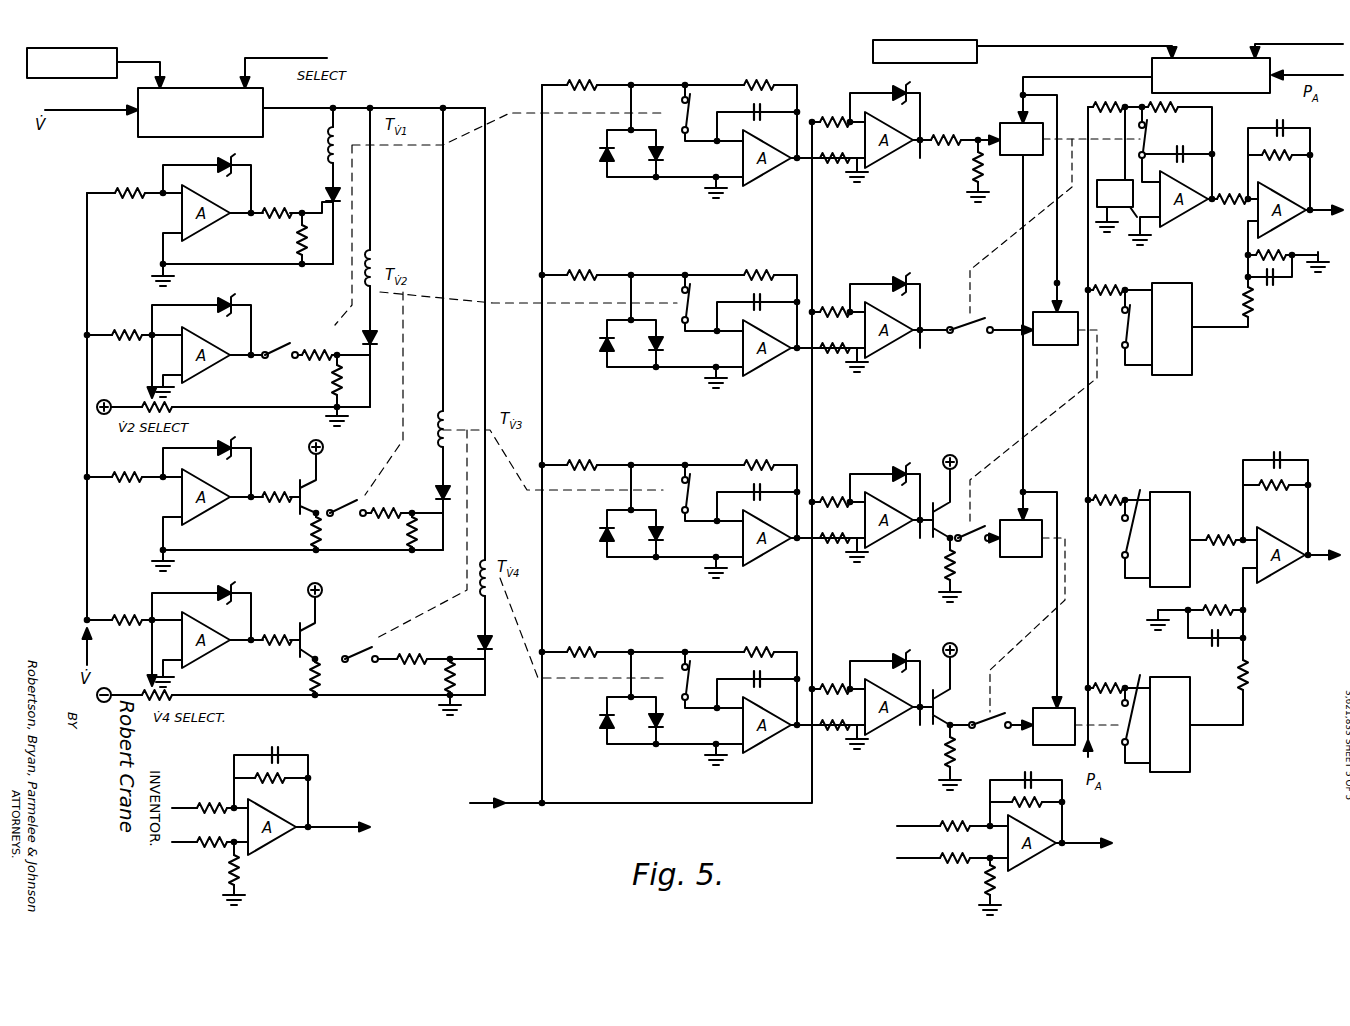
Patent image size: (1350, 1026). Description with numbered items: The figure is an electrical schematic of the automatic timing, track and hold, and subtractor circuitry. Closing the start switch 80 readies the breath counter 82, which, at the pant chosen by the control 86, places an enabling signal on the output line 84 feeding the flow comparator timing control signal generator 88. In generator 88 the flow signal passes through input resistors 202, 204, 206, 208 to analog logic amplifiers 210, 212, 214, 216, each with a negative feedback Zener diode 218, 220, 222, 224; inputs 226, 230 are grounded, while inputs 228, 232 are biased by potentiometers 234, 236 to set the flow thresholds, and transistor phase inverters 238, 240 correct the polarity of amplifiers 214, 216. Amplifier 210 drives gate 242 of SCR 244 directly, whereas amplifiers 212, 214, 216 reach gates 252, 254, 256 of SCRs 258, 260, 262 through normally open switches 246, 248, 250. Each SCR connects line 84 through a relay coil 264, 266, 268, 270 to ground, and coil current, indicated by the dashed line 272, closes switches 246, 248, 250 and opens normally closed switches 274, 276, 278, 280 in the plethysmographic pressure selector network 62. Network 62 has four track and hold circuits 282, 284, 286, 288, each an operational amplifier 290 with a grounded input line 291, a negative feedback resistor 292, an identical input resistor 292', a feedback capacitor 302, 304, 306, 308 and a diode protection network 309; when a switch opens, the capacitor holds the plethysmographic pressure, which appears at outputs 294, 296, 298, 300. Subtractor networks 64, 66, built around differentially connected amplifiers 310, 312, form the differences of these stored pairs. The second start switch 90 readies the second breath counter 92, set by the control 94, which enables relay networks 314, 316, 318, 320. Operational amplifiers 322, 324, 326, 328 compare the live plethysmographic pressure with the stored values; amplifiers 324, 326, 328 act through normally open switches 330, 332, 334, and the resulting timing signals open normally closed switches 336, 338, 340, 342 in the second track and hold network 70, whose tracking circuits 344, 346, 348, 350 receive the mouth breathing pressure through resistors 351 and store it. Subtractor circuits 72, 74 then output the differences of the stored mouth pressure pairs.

The plethysmographic pressure selector network 62 is at (580, 818).
The subtractor network 64 is at (280, 829).
The subtractor network 66 is at (1017, 843).
The second track and hold network 70 is at (1129, 780).
The subtractor circuit 72 is at (1288, 298).
The subtractor circuit 74 is at (1265, 612).
The start switch 80 is at (93, 78).
The breath counter 82 is at (137, 116).
The output line 84 is at (283, 108).
The control 86 is at (262, 52).
The flow comparator timing control signal generator 88 is at (422, 712).
The second start switch 90 is at (950, 64).
The second breath counter 92 is at (1262, 94).
The control 94 is at (1248, 44).
The input resistor 202 is at (125, 190).
The input resistor 204 is at (133, 330).
The input resistor 206 is at (120, 470).
The input resistor 208 is at (128, 612).
The analog logic amplifier 210 is at (215, 226).
The analog logic amplifier 212 is at (215, 370).
The analog logic amplifier 214 is at (208, 515).
The analog logic amplifier 216 is at (212, 655).
The Zener diode 218 is at (228, 160).
The Zener diode 220 is at (228, 295).
The Zener diode 222 is at (225, 445).
The Zener diode 224 is at (228, 588).
The input 226 is at (163, 252).
The input 228 is at (150, 383).
The input 230 is at (163, 530).
The input 232 is at (150, 658).
The potentiometer 234 is at (145, 400).
The potentiometer 236 is at (178, 697).
The transistor phase inverter 238 is at (330, 486).
The transistor phase inverter 240 is at (327, 622).
The gate 242 is at (330, 195).
The silicon controlled rectifier 244 is at (340, 198).
The normally open switch 246 is at (287, 342).
The normally open switch 248 is at (367, 497).
The normally open switch 250 is at (352, 640).
The gate 252 is at (365, 336).
The gate 254 is at (420, 545).
The gate 256 is at (478, 643).
The silicon controlled rectifier 258 is at (356, 394).
The silicon controlled rectifier 260 is at (450, 512).
The silicon controlled rectifier 262 is at (486, 652).
The relay coil 264 is at (340, 128).
The relay coil 266 is at (373, 268).
The relay coil 268 is at (450, 411).
The relay coil 270 is at (488, 556).
The dashed line 272 is at (428, 150).
The normally closed switch 274 is at (675, 110).
The normally closed switch 276 is at (675, 300).
The normally closed switch 278 is at (675, 490).
The normally closed switch 280 is at (675, 677).
The track and hold circuit 282 is at (810, 96).
The track and hold circuit 284 is at (840, 275).
The track and hold circuit 286 is at (843, 458).
The track and hold circuit 288 is at (845, 644).
The operational amplifier 290 is at (775, 745).
The grounded input line 291 is at (722, 748).
The negative feedback resistor 292 is at (717, 383).
The input resistor 292' is at (586, 350).
The output 294 is at (182, 806).
The output 296 is at (187, 845).
The output 298 is at (930, 825).
The output 300 is at (920, 860).
The negative feedback capacitor 302 is at (755, 108).
The negative feedback capacitor 304 is at (755, 298).
The negative feedback capacitor 306 is at (755, 488).
The negative feedback capacitor 308 is at (755, 675).
The diode protection network 309 is at (1105, 228).
The linear operational amplifier 310 is at (280, 842).
The linear operational amplifier 312 is at (1035, 855).
The relay network 314 is at (1030, 157).
The relay network 316 is at (1060, 347).
The relay network 318 is at (1028, 558).
The relay network 320 is at (1040, 747).
The operational amplifier 322 is at (890, 158).
The operational amplifier 324 is at (890, 348).
The operational amplifier 326 is at (890, 545).
The operational amplifier 328 is at (890, 732).
The normally open switch 330 is at (985, 300).
The normally open switch 332 is at (978, 522).
The normally open switch 334 is at (1000, 705).
The normally closed switch 336 is at (1150, 128).
The normally closed switch 338 is at (1132, 355).
The normally closed switch 340 is at (1133, 525).
The normally closed switch 342 is at (1131, 712).
The tracking circuit 344 is at (1187, 222).
The tracking circuit 346 is at (1180, 385).
The tracking circuit 348 is at (1190, 482).
The tracking circuit 350 is at (1198, 785).
The resistor 351 is at (1107, 685).